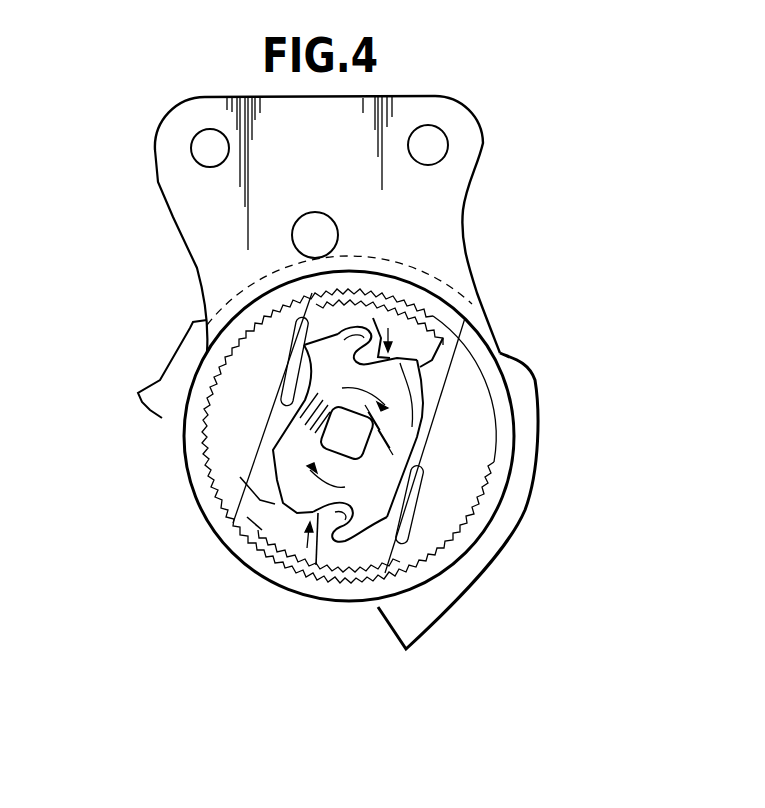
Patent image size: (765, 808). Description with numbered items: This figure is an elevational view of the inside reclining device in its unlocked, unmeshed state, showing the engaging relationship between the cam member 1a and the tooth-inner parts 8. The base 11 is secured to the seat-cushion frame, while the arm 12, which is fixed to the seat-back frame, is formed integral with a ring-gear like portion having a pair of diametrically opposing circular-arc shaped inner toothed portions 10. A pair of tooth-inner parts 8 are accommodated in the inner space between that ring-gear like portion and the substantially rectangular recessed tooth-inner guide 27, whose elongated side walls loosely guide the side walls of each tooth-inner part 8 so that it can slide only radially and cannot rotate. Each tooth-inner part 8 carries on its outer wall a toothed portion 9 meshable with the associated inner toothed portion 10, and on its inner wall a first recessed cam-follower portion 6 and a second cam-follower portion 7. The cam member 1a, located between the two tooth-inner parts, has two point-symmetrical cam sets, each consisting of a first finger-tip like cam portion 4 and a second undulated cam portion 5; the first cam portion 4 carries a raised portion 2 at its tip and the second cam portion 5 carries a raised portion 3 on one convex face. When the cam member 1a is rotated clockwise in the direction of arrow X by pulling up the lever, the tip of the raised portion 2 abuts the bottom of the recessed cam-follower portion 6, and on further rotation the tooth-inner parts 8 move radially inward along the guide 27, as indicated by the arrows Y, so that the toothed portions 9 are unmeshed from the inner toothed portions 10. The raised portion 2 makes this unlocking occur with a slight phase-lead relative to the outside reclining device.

The cam member 1a is at (402, 452).
The raised portion 2 is at (387, 292).
The raised portion 3 is at (280, 500).
The first cam portion 4 is at (350, 343).
The second cam portion 5 is at (400, 377).
The first recessed cam-follower portion 6 is at (420, 500).
The second cam-follower portion 7 is at (322, 515).
The tooth-inner part 8 is at (253, 488).
The toothed portion 9 is at (290, 548).
The inner toothed portion 10 is at (345, 545).
The base 11 is at (160, 383).
The arm 12 is at (185, 232).
The recessed tooth-inner guide 27 is at (440, 492).